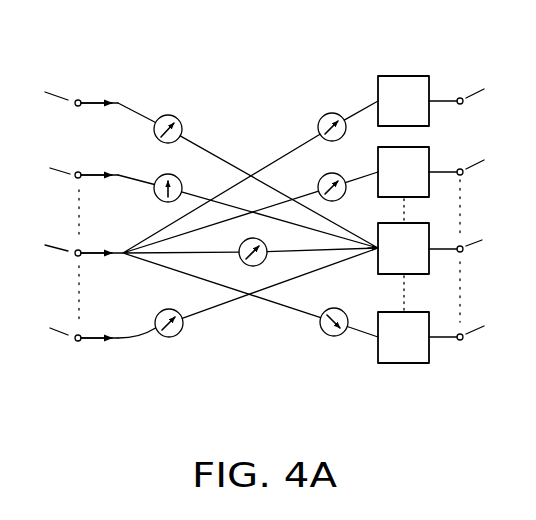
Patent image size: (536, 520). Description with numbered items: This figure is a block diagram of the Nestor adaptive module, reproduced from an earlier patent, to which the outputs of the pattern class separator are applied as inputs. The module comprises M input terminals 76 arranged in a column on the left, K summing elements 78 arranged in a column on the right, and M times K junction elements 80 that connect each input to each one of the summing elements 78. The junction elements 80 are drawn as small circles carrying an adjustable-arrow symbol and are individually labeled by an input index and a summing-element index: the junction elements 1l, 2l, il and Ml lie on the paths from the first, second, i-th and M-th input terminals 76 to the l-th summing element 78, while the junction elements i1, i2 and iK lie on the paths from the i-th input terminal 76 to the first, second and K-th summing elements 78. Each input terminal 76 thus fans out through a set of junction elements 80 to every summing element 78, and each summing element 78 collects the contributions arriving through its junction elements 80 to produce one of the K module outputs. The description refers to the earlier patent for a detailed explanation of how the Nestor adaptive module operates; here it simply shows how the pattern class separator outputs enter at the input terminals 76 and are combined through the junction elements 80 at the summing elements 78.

The input terminals 76 is at (98, 358).
The summing elements 78 is at (389, 74).
The junction elements 80 is at (298, 117).
The weighting element 1l is at (163, 118).
The weighting element 2l is at (164, 203).
The weighting element il is at (247, 263).
The weighting element Ml is at (157, 317).
The weighting element i1 is at (327, 113).
The weighting element i2 is at (332, 173).
The weighting element iK is at (332, 308).